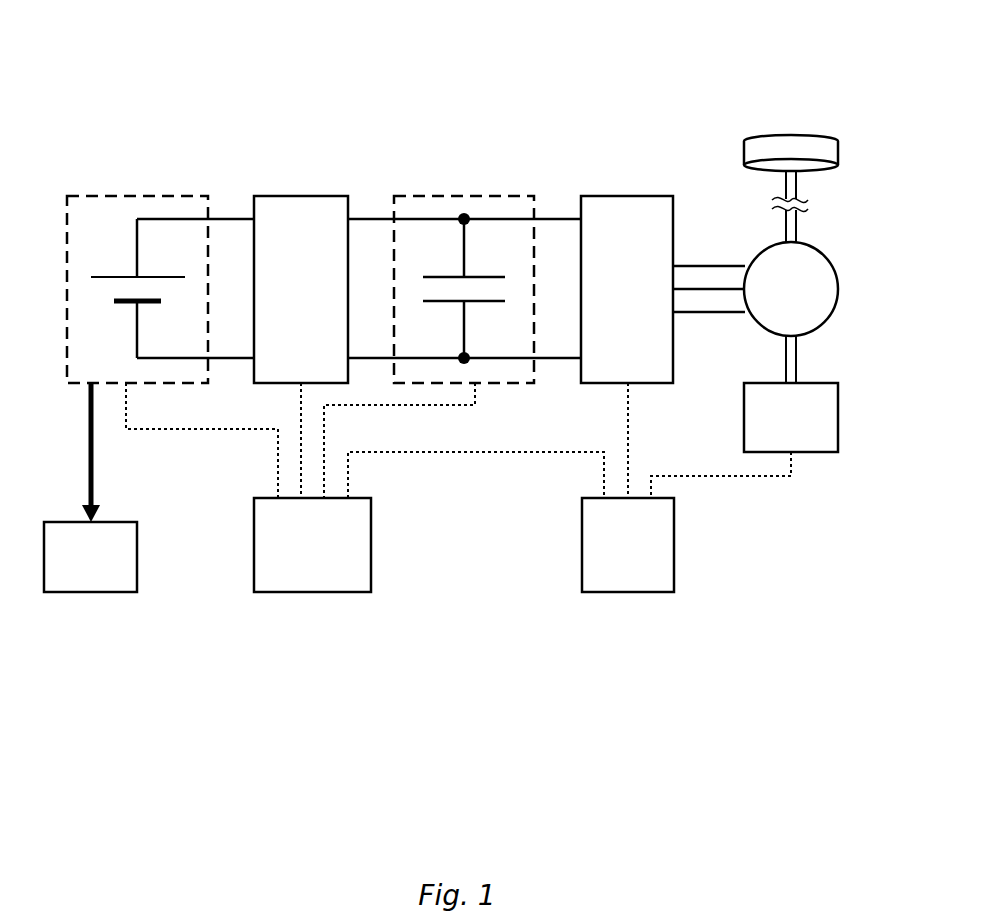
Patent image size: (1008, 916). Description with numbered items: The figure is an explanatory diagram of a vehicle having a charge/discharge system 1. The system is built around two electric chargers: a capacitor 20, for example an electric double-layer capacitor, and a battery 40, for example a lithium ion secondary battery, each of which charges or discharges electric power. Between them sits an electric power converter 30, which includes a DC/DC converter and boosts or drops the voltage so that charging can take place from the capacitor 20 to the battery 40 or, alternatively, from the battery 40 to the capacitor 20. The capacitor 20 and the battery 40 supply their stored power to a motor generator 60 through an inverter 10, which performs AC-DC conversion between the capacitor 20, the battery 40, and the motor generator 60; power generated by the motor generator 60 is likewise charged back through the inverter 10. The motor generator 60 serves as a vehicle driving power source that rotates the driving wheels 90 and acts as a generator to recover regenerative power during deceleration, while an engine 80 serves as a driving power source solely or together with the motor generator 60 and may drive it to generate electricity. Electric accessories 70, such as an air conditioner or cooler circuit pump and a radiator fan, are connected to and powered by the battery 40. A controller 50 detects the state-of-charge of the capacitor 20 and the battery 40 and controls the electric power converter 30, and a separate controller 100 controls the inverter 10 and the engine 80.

The charge/discharge system 1 is at (703, 72).
The inverter 10 is at (627, 196).
The capacitor 20 is at (463, 196).
The electric power converter 30 is at (299, 196).
The battery 40 is at (136, 196).
The controller 50 is at (371, 543).
The motor generator 60 is at (763, 248).
The electric accessories 70 is at (137, 543).
The engine 80 is at (744, 418).
The driving wheels 90 is at (744, 150).
The controller 100 is at (674, 543).